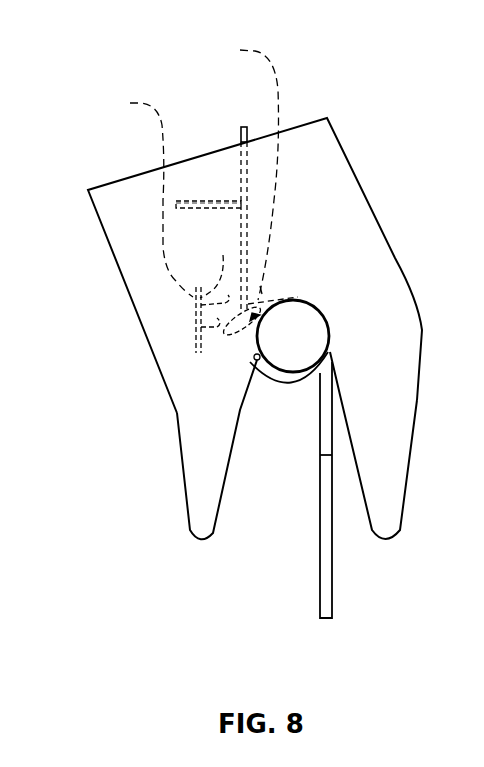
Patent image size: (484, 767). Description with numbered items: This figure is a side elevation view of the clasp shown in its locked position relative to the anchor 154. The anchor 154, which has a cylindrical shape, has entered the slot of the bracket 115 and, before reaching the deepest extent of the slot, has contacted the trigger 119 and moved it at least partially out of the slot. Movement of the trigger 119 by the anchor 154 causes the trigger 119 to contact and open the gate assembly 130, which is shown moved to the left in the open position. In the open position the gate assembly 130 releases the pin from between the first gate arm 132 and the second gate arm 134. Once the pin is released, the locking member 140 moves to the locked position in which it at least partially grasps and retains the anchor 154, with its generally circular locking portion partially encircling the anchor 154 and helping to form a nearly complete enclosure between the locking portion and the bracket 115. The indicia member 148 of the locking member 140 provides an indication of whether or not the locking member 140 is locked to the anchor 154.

The bracket 115 is at (327, 155).
The trigger 119 is at (240, 171).
The gate assembly 130 is at (188, 305).
The first gate arm 132 is at (220, 248).
The second gate arm 134 is at (195, 325).
The locking member 140 is at (165, 427).
The indicia member 148 is at (241, 127).
The anchor 154 is at (293, 357).